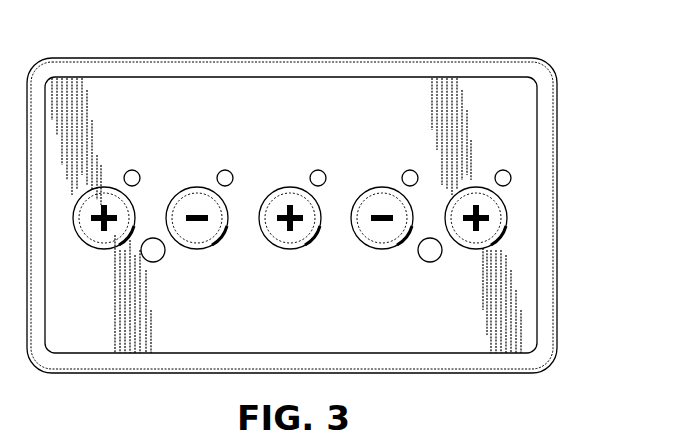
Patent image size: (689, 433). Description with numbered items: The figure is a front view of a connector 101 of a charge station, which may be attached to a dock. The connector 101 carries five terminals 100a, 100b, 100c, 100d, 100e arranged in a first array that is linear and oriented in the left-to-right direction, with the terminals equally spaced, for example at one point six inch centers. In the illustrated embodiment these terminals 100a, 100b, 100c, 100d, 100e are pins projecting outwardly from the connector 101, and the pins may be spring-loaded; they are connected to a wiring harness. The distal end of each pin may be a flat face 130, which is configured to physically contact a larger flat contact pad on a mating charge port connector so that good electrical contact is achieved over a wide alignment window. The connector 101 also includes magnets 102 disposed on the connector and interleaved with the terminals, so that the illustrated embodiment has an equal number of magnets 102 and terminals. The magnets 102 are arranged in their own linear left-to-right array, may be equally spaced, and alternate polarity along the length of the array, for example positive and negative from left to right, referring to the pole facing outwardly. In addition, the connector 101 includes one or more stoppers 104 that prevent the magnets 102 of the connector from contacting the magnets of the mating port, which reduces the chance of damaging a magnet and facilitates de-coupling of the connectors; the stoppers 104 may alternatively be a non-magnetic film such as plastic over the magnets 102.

The connector 101 is at (557, 46).
The terminal 100a is at (127, 171).
The terminal 100b is at (220, 171).
The terminal 100c is at (313, 171).
The terminal 100d is at (406, 171).
The terminal 100e is at (504, 170).
The flat face 130 is at (402, 179).
The magnet 102 is at (84, 246).
The stopper 104 is at (430, 263).